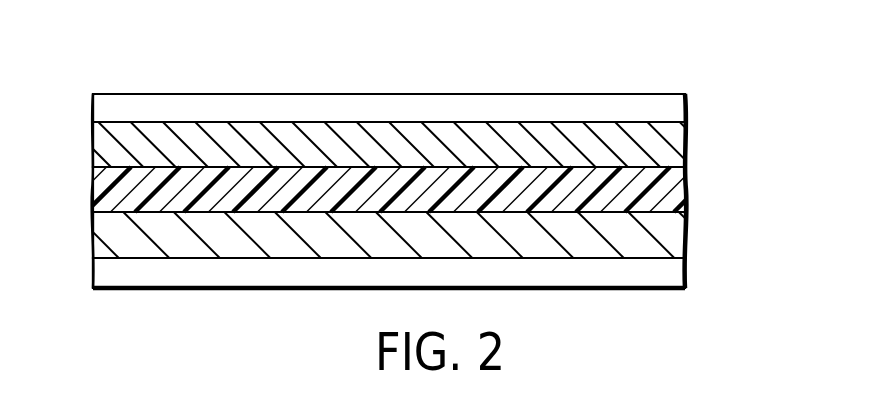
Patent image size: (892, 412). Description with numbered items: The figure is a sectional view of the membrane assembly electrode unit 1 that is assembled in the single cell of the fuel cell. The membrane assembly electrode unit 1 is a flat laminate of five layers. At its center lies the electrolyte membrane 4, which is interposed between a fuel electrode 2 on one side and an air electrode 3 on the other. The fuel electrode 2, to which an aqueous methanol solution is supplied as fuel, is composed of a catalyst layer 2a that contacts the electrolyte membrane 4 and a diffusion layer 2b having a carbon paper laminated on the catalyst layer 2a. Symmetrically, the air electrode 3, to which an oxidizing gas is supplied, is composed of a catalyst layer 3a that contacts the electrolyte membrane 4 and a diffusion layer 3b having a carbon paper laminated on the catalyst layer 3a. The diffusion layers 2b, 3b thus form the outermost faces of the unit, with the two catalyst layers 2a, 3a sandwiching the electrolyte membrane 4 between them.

The membrane assembly electrode unit 1 is at (666, 73).
The fuel electrode 2 is at (757, 77).
The catalyst layer 2a is at (678, 153).
The diffusion layer 2b is at (678, 108).
The air electrode 3 is at (757, 200).
The catalyst layer 3a is at (678, 237).
The diffusion layer 3b is at (678, 277).
The electrolyte membrane 4 is at (678, 192).